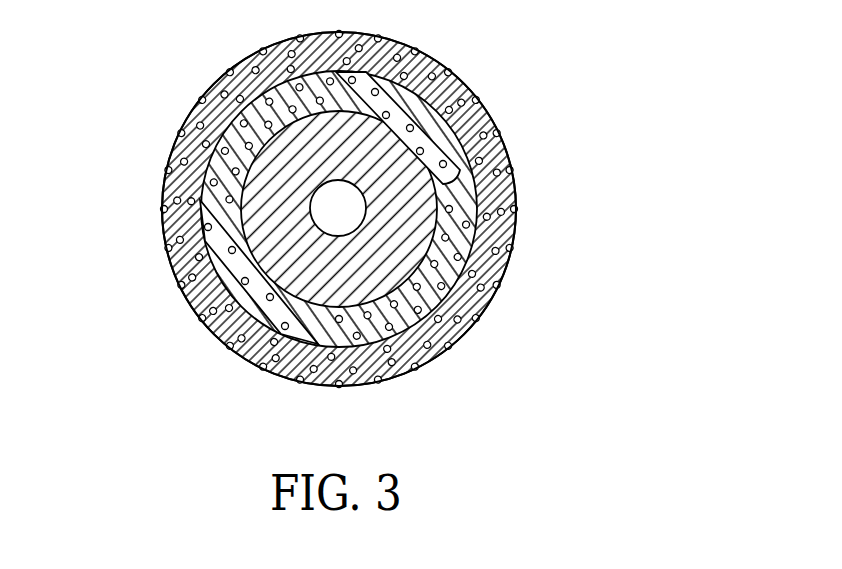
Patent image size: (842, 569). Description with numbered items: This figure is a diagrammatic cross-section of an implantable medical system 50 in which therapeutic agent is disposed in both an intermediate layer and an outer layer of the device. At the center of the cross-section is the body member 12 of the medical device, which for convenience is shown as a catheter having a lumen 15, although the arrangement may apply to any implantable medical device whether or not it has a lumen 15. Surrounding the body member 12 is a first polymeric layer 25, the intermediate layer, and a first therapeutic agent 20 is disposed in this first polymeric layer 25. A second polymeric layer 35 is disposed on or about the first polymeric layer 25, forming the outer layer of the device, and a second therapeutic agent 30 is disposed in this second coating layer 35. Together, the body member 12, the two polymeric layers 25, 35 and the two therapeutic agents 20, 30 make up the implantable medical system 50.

The implantable medical system 50 is at (148, 162).
The second therapeutic agent 30 is at (482, 274).
The second polymeric layer 35 is at (256, 56).
The first polymeric layer 25 is at (437, 68).
The first therapeutic agent 20 is at (455, 169).
The body member 12 is at (418, 187).
The lumen 15 is at (338, 180).